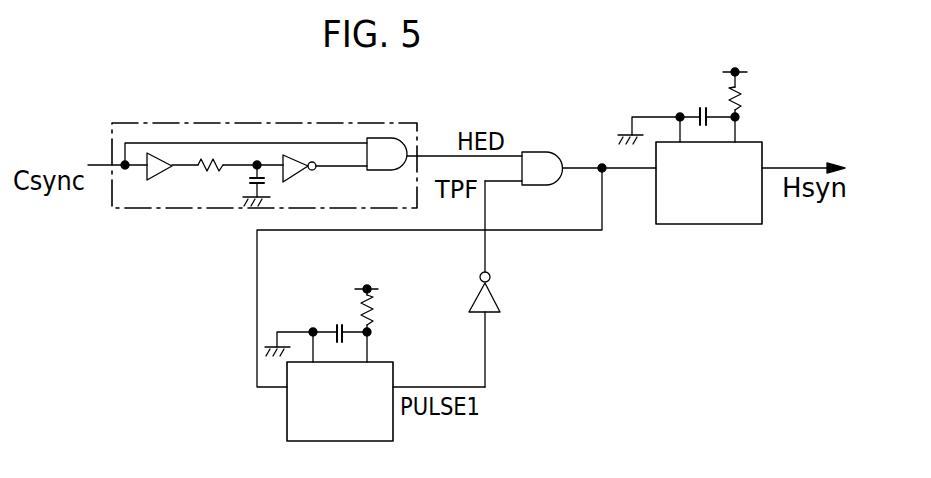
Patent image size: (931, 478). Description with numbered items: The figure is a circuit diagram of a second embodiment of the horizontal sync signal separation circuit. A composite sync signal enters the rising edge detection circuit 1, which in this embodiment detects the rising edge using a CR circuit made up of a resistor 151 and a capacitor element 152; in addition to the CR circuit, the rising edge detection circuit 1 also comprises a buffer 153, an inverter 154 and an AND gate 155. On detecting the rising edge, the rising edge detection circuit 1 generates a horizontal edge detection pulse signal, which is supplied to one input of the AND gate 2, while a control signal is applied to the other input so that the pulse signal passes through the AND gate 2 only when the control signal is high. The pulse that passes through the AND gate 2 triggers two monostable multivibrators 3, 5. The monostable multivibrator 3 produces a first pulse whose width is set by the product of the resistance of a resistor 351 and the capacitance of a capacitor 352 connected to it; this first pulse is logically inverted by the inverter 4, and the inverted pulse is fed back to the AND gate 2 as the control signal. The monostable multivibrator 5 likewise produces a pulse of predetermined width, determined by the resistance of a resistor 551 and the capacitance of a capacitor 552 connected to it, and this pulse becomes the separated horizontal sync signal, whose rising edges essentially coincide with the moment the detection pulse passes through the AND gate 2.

The rising edge detection circuit 1 is at (135, 122).
The resistor 151 is at (205, 172).
The capacitor element 152 is at (248, 183).
The buffer 153 is at (168, 165).
The inverter 154 is at (297, 157).
The AND gate 155 is at (393, 138).
The AND gate 2 is at (543, 152).
The monostable multivibrator 3 is at (287, 417).
The resistor 351 is at (365, 307).
The capacitor 352 is at (333, 323).
The inverter 4 is at (493, 293).
The monostable multivibrator 5 is at (687, 224).
The resistor 551 is at (732, 92).
The capacitor 552 is at (700, 112).